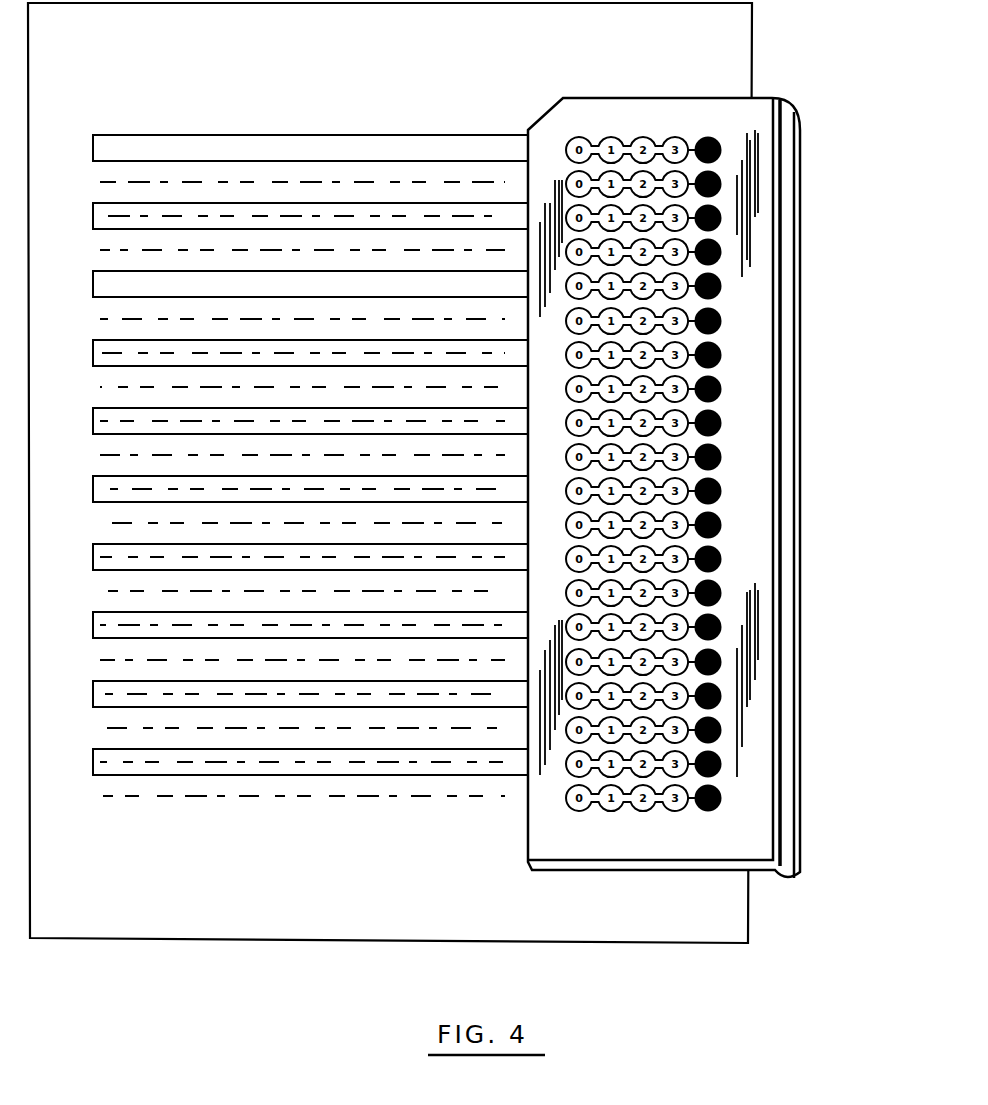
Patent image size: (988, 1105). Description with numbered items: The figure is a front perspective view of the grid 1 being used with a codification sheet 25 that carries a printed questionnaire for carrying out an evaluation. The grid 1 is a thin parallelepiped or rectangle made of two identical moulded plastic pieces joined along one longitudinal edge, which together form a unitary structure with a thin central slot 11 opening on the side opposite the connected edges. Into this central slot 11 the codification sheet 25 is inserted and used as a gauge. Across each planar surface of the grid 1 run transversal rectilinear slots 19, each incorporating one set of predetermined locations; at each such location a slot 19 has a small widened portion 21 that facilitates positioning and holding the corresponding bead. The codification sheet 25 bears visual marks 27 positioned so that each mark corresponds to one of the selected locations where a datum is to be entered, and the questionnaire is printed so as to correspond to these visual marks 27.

The grid 1 is at (680, 473).
The central slot 11 is at (667, 873).
The rectilinear slot 19 is at (628, 537).
The widened portion 21 is at (675, 811).
The codification sheet 25 is at (200, 891).
The visual marks 27 is at (675, 137).